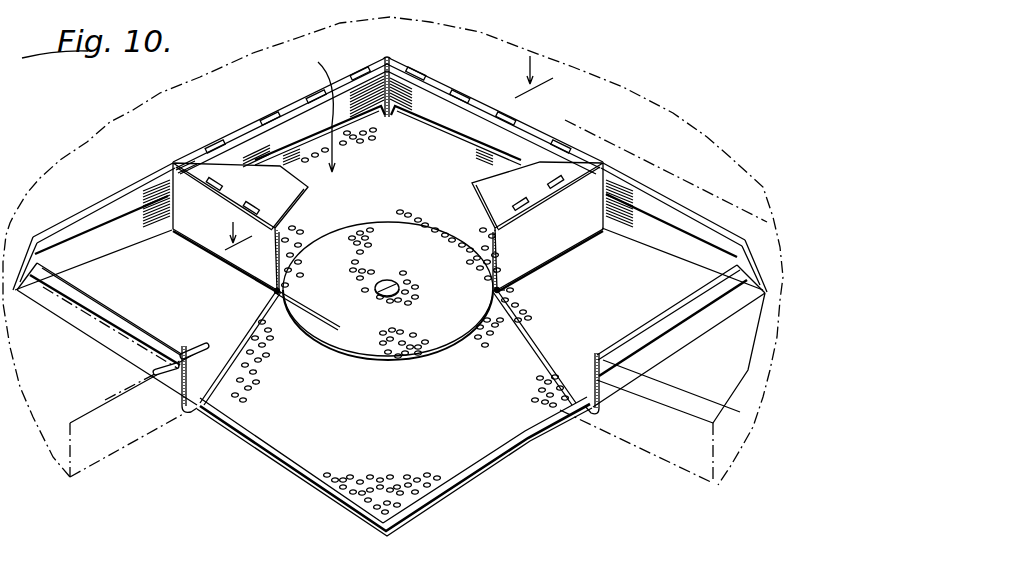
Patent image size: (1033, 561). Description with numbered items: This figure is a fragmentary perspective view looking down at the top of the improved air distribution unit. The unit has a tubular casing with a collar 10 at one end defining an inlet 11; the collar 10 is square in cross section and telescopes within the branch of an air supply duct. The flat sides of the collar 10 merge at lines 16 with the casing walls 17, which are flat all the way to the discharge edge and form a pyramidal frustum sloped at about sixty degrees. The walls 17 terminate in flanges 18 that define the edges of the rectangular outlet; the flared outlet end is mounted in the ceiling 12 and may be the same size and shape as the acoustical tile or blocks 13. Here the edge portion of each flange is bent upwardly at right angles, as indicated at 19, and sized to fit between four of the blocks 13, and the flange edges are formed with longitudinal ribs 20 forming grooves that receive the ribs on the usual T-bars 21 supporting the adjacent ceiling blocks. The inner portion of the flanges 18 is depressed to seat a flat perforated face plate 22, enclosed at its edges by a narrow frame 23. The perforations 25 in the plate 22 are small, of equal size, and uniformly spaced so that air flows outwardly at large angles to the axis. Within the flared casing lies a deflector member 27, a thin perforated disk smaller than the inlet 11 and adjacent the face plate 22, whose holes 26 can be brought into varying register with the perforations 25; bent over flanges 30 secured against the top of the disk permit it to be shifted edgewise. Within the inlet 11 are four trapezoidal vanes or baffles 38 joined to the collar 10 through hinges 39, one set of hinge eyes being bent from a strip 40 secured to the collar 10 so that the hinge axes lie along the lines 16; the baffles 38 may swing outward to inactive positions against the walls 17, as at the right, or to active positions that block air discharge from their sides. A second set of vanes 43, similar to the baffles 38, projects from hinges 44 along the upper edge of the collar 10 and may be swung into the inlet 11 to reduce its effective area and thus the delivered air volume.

The collar 10 is at (190, 200).
The inlet 11 is at (383, 152).
The ceiling 12 is at (114, 452).
The tile or blocks 13 is at (110, 402).
The merge lines 16 is at (503, 289).
The casing walls 17 is at (540, 375).
The flanges 18 is at (181, 396).
The upwardly bent flange edge portion 19 is at (191, 412).
The longitudinal ribs 20 is at (195, 360).
The T-bars 21 is at (208, 346).
The perforated face plate 22 is at (472, 448).
The frame 23 is at (520, 445).
The perforations 25 is at (392, 476).
The holes 26 is at (400, 359).
The deflector member 27 is at (352, 344).
The bent over flanges 30 is at (392, 280).
The vanes or baffles 38 is at (310, 318).
The hinges 39 is at (282, 292).
The strip 40 is at (302, 145).
The vanes 43 is at (246, 142).
The hinges 44 is at (428, 95).